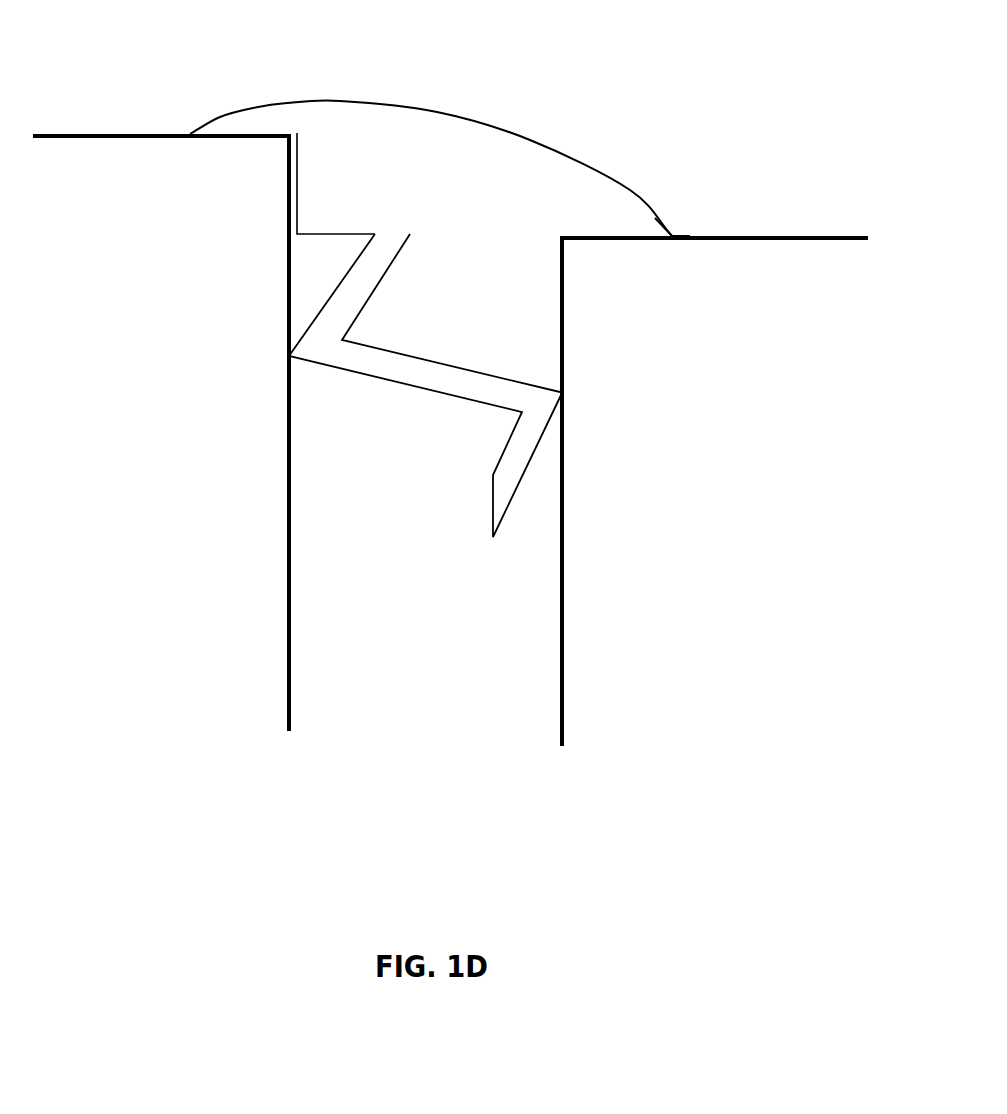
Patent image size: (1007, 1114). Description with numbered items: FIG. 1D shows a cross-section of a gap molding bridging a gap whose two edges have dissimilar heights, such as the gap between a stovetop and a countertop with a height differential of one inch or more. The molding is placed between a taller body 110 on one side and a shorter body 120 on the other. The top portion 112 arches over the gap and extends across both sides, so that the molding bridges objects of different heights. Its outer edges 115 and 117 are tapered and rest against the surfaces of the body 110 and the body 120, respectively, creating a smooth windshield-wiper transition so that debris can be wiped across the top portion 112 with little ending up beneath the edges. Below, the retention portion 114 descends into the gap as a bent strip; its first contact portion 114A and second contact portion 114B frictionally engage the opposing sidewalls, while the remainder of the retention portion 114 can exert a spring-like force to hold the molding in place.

The first substrate / left body 110 is at (204, 432).
The second substrate / right body 120 is at (715, 492).
The top portion 112 is at (435, 128).
The retention portion 114 is at (435, 380).
The first contact portion 114A is at (289, 356).
The second contact portion 114B is at (562, 392).
The outer edge 115 is at (205, 133).
The outer edge 117 is at (653, 225).